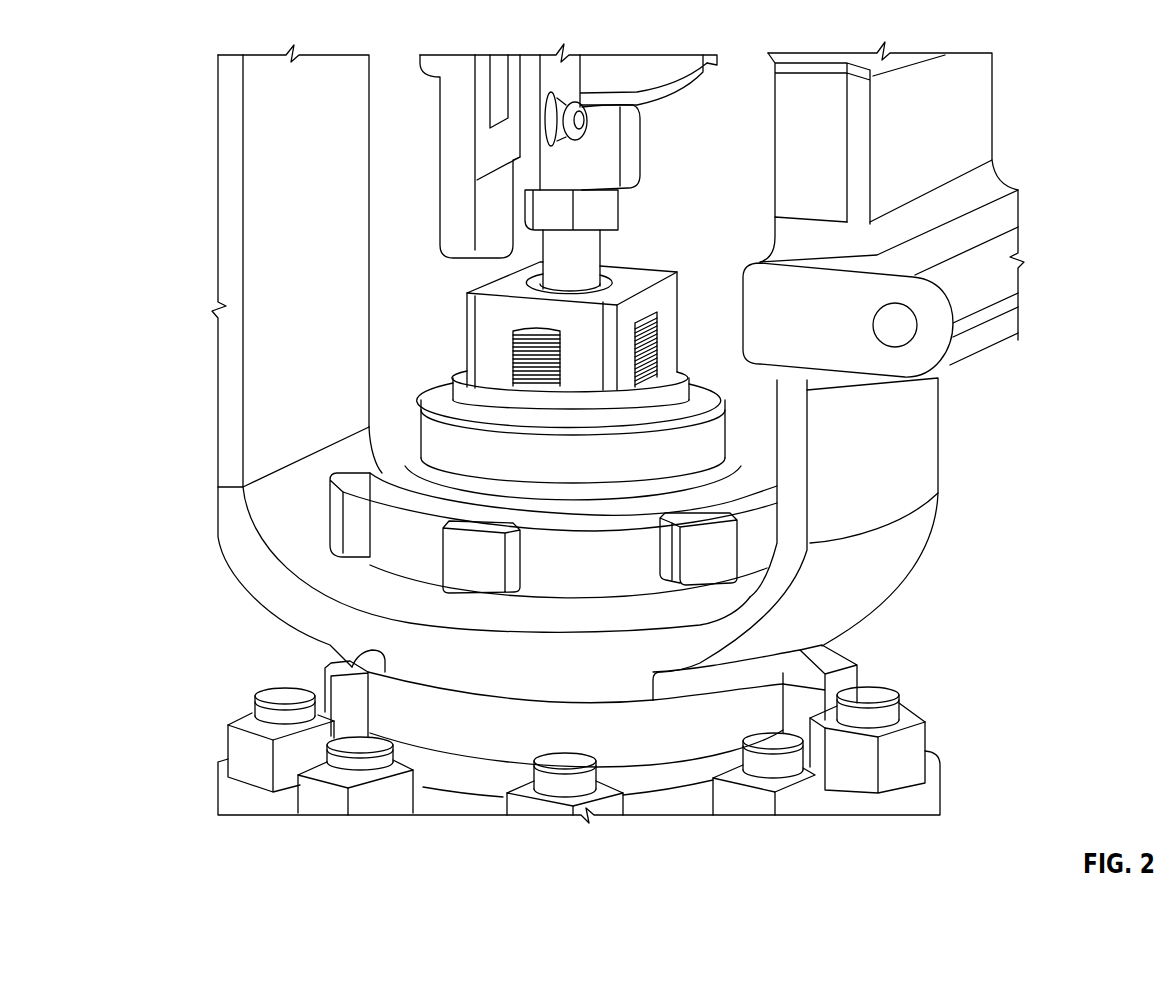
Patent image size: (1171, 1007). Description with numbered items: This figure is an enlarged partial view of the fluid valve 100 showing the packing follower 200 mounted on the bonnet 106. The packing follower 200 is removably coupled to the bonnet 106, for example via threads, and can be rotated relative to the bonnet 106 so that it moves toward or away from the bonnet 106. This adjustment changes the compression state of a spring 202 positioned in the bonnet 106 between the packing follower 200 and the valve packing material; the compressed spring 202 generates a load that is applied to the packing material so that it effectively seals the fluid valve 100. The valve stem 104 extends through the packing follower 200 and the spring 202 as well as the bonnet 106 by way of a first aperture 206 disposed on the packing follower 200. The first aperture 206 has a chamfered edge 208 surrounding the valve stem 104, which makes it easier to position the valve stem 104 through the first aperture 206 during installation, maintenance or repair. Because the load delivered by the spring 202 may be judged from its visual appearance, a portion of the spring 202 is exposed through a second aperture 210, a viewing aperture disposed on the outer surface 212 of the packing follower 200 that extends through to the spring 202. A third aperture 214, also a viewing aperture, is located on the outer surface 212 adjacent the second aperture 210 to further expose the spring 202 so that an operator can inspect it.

The fluid valve 100 is at (933, 666).
The valve stem 104 is at (602, 246).
The bonnet 106 is at (703, 437).
The packing follower 200 is at (677, 272).
The spring 202 is at (527, 345).
The first aperture 206 is at (557, 270).
The chamfered edge 208 is at (533, 277).
The second aperture 210 is at (656, 386).
The outer surface 212 is at (516, 323).
The third aperture 214 is at (500, 369).